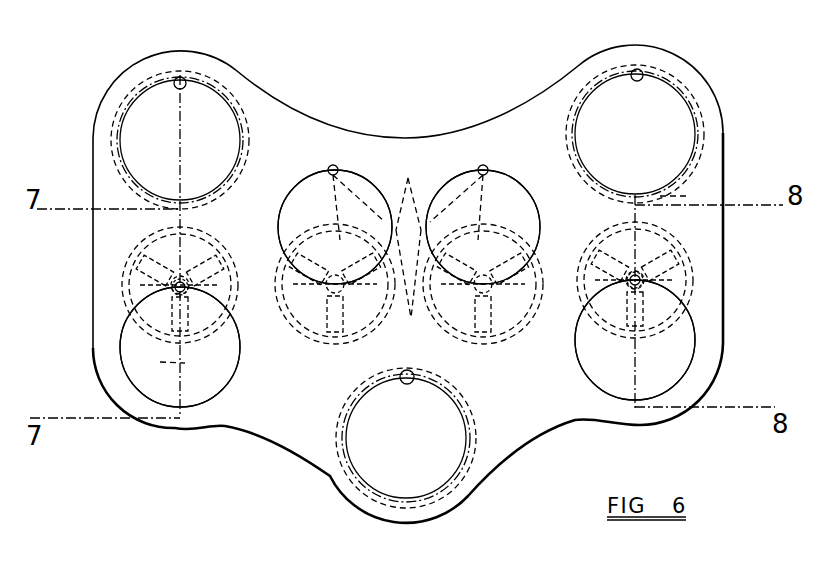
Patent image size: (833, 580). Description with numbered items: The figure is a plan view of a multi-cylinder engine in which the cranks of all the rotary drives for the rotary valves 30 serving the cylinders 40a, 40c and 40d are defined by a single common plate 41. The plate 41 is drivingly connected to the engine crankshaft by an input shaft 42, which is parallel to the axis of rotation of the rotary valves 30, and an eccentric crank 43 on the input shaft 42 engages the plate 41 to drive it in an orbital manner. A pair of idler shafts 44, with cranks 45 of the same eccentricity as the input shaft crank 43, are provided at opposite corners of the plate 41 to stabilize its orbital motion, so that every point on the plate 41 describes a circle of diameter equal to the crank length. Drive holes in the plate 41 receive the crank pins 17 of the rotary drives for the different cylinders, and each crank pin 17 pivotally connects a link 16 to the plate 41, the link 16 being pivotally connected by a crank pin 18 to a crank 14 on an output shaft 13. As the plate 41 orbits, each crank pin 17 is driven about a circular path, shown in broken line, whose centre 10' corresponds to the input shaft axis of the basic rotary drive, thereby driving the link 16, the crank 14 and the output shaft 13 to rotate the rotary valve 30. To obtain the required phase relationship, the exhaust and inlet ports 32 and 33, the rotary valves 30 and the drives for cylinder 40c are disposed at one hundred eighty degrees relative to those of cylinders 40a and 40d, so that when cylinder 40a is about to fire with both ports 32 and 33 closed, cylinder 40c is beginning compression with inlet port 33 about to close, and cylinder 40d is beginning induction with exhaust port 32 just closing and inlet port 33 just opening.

The centre of circular path 10' is at (402, 241).
The output shaft 13 is at (130, 315).
The second crank 14 is at (411, 318).
The link 16 is at (363, 228).
The crank pin 17 is at (334, 165).
The crank pin 18 is at (85, 382).
The rotary valve 30 is at (140, 250).
The exhaust port 32 is at (283, 300).
The inlet port 33 is at (135, 281).
The cylinder 40a is at (160, 232).
The cylinder 40c is at (508, 328).
The cylinder 40d is at (728, 337).
The common plate 41 is at (294, 432).
The input shaft 42 is at (441, 472).
The eccentric crank 43 is at (407, 385).
The idler shaft 44 is at (150, 105).
The crank 45 is at (182, 78).